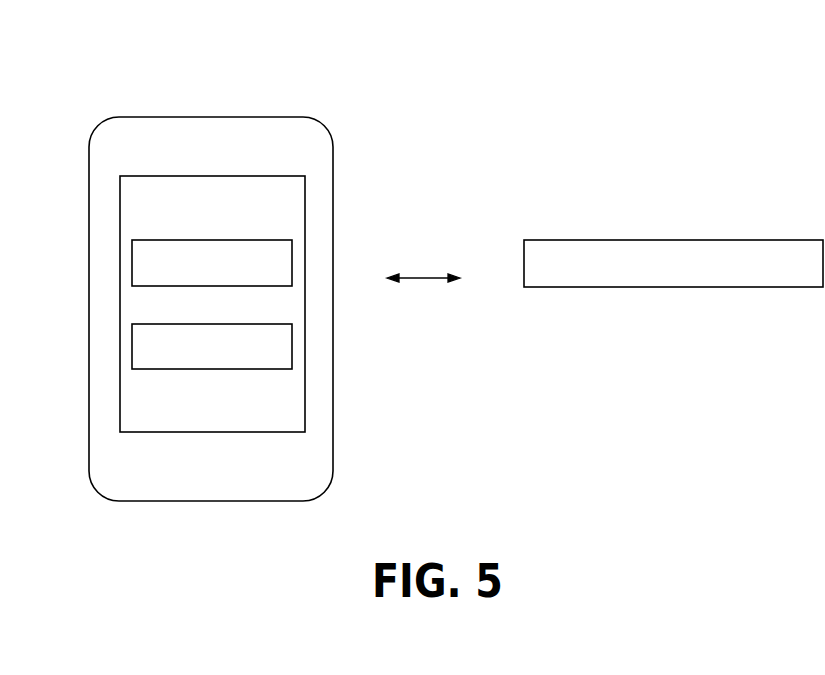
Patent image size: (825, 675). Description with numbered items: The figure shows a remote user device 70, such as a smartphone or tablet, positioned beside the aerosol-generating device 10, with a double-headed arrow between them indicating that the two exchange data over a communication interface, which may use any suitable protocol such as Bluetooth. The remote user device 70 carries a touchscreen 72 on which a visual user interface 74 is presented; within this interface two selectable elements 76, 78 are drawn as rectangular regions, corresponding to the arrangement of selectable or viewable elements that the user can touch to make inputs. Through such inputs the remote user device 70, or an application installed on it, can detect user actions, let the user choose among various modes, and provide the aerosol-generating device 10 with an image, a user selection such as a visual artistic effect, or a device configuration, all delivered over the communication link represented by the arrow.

The sensor device / card 10 is at (707, 227).
The mobile device 70 is at (260, 106).
The display 72 is at (288, 220).
The user interface 74 is at (155, 170).
The button 76 is at (132, 275).
The button 78 is at (132, 357).